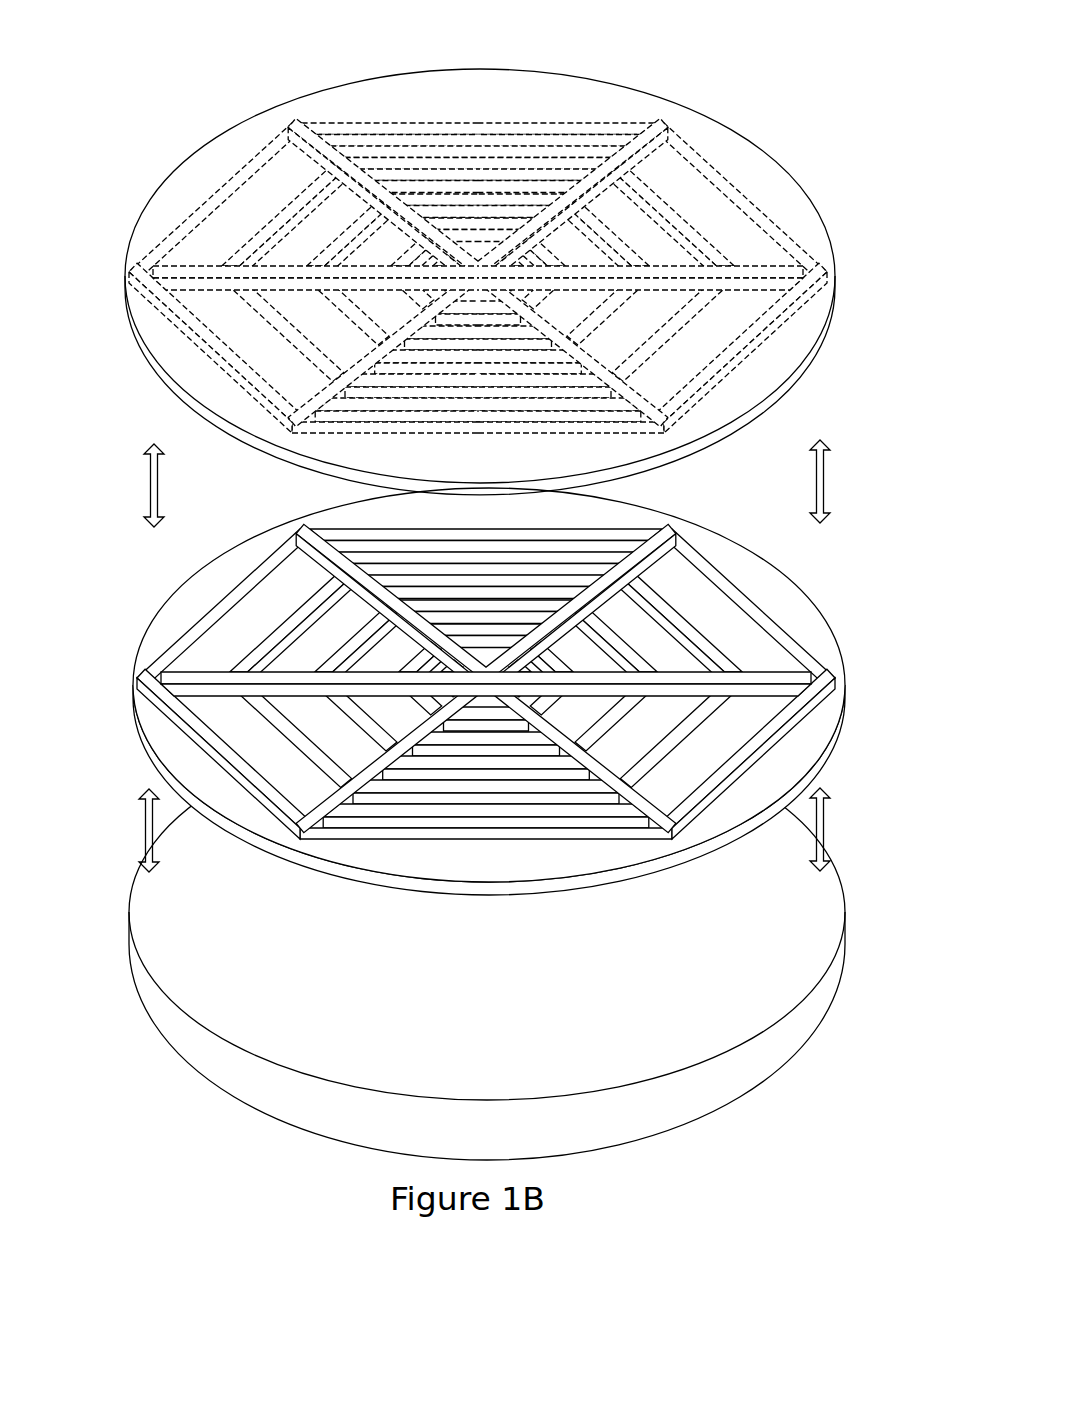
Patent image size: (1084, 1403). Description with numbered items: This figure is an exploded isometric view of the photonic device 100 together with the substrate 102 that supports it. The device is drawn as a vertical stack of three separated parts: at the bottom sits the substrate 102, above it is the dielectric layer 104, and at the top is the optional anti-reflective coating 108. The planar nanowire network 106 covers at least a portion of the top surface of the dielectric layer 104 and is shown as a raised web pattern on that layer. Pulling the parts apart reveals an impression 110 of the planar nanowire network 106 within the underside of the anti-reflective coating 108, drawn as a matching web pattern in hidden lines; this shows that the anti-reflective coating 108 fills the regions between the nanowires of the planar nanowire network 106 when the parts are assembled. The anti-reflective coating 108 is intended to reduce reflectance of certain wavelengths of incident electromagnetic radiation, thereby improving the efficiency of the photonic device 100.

The photonic device 100 is at (772, 113).
The substrate 102 is at (722, 1086).
The dielectric layer 104 is at (763, 575).
The planar nanowire network 106 is at (604, 521).
The anti-reflective coating 108 is at (763, 172).
The impression 110 is at (617, 117).